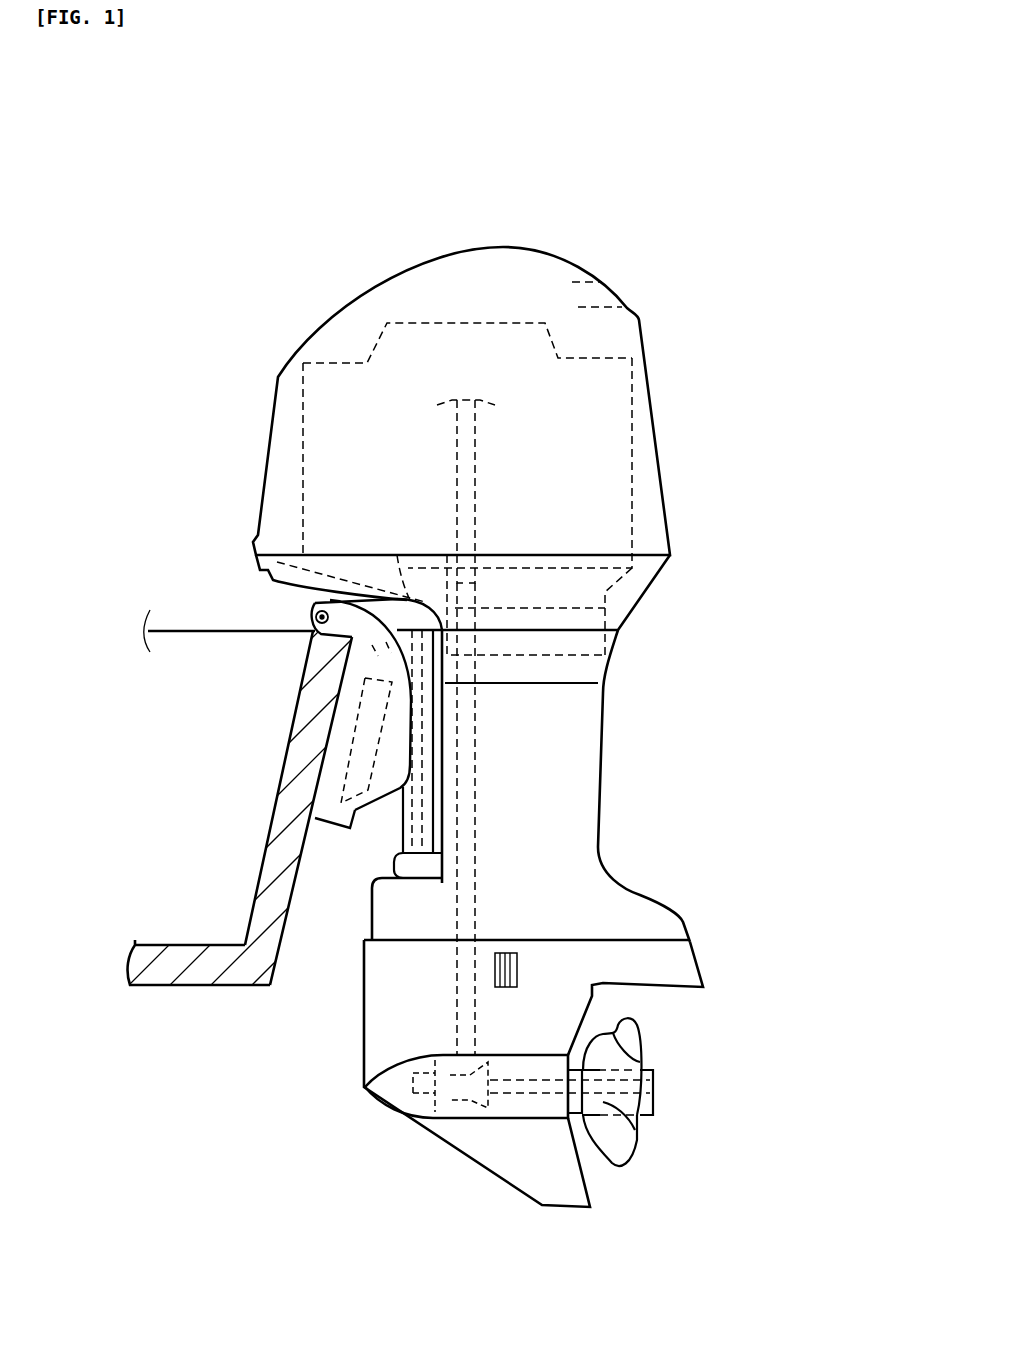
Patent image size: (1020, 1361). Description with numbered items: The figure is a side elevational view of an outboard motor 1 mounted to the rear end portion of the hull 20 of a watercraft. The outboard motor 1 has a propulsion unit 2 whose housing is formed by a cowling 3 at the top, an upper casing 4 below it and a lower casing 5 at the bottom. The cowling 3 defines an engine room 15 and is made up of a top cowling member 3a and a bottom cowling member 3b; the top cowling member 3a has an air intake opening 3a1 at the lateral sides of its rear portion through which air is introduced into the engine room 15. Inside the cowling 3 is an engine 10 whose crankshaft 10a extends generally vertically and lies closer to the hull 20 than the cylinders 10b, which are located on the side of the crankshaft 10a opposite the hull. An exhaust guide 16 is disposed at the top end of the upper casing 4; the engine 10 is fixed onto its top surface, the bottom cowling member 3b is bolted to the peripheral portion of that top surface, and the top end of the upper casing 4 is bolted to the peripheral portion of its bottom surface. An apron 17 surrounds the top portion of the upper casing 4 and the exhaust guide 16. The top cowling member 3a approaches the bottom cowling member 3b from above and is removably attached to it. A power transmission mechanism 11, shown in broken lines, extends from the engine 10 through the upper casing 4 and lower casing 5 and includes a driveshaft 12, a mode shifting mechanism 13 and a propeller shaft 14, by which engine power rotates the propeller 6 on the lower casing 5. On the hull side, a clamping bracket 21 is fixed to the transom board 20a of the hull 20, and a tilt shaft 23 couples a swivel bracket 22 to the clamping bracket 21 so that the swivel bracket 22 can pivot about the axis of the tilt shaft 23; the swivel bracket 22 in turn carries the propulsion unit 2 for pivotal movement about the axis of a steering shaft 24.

The outboard motor 1 is at (503, 76).
The propulsion unit 2 is at (717, 540).
The cowling 3 is at (483, 438).
The top cowling member 3a is at (323, 343).
The air intake opening 3a1 is at (620, 295).
The bottom cowling member 3b is at (625, 595).
The upper casing 4 is at (633, 772).
The lower casing 5 is at (712, 965).
The propeller 6 is at (622, 1062).
The engine 10 is at (522, 507).
The crankshaft 10a is at (467, 465).
The cylinders 10b is at (600, 525).
The power transmission mechanism 11 is at (487, 792).
The driveshaft 12 is at (462, 838).
The mode shifting mechanism 13 is at (443, 1067).
The propeller shaft 14 is at (533, 1090).
The engine room 15 is at (425, 288).
The exhaust guide 16 is at (620, 640).
The apron 17 is at (587, 670).
The hull 20 is at (98, 1002).
The transom board 20a is at (287, 857).
The clamping bracket 21 is at (387, 772).
The swivel bracket 22 is at (353, 633).
The tilt shaft 23 is at (313, 608).
The steering shaft 24 is at (410, 820).